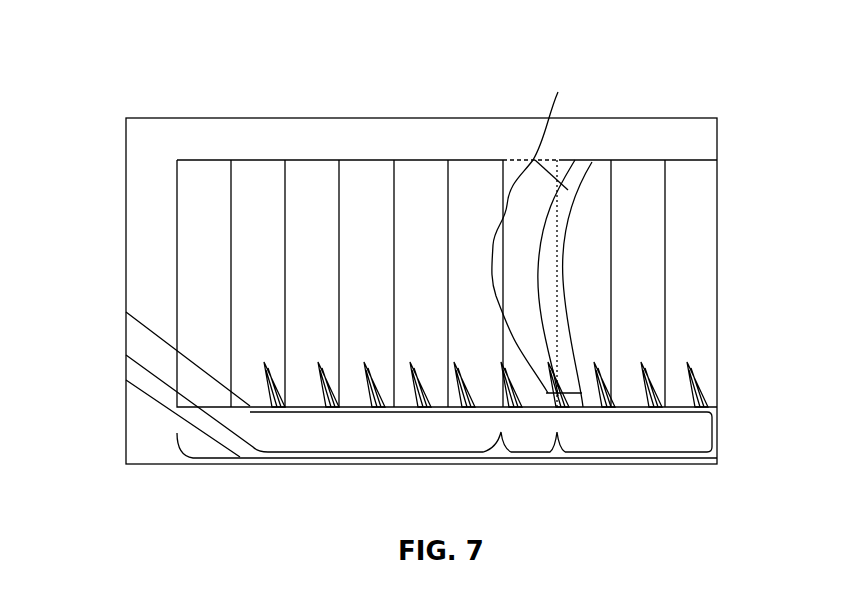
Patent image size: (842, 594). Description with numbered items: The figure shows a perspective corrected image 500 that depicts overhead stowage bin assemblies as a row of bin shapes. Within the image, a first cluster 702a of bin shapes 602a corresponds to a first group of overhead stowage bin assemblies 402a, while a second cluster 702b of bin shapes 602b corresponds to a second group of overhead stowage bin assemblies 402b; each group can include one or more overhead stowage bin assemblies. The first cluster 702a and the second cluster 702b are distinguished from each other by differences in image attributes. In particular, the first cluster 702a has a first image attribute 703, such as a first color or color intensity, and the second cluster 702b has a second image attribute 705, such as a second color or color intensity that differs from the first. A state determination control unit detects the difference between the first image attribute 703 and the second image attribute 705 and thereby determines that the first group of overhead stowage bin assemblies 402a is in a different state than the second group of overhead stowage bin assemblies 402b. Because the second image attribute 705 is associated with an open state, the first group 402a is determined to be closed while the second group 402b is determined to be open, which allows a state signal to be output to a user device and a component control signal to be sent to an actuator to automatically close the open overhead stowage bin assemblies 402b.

The perspective corrected image 500 is at (100, 275).
The first group of overhead stowage bin assemblies 402a is at (428, 158).
The second group of overhead stowage bin assemblies 402b is at (538, 207).
The bin shapes 602a is at (425, 197).
The bin shapes 602b is at (543, 236).
The first image attribute 703 is at (310, 190).
The second image attribute 705 is at (568, 190).
The first cluster 702a is at (357, 464).
The second cluster 702b is at (518, 458).